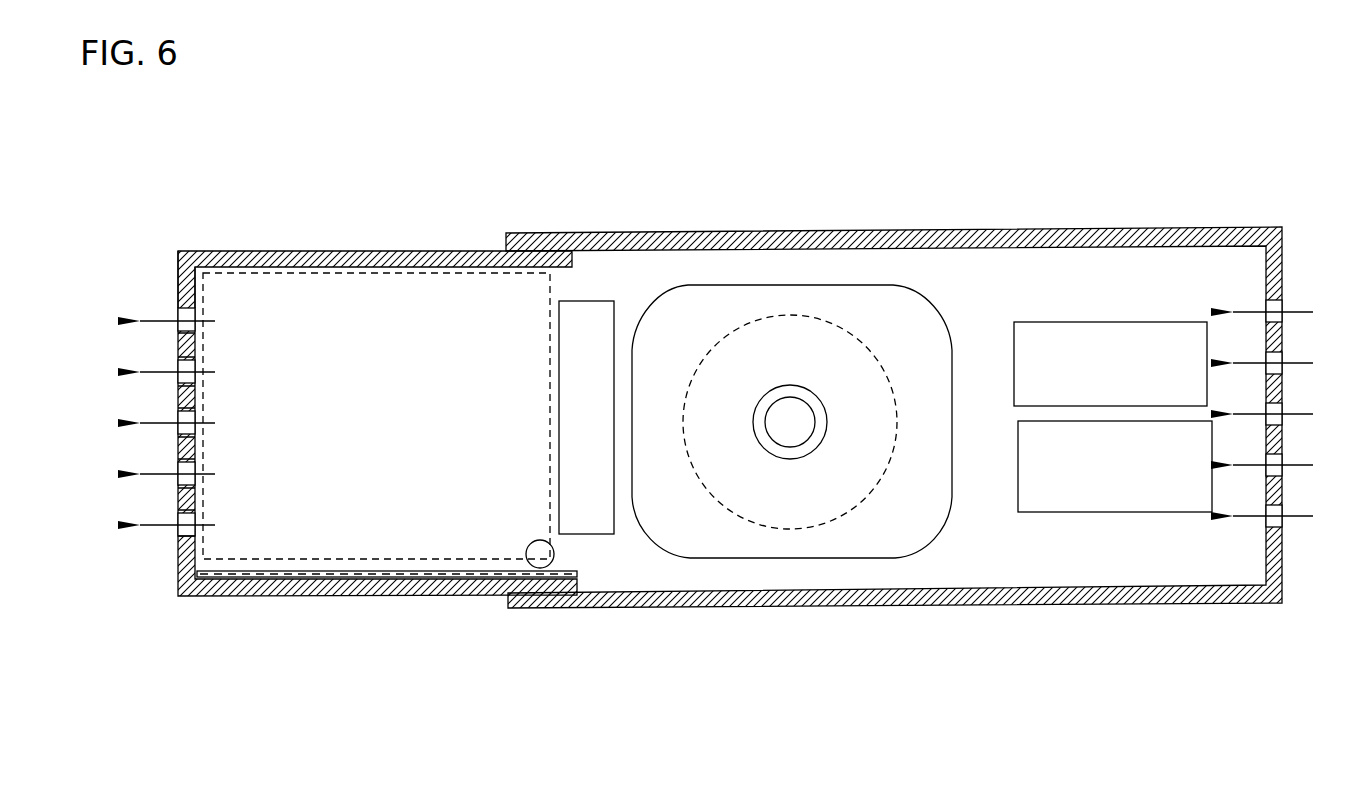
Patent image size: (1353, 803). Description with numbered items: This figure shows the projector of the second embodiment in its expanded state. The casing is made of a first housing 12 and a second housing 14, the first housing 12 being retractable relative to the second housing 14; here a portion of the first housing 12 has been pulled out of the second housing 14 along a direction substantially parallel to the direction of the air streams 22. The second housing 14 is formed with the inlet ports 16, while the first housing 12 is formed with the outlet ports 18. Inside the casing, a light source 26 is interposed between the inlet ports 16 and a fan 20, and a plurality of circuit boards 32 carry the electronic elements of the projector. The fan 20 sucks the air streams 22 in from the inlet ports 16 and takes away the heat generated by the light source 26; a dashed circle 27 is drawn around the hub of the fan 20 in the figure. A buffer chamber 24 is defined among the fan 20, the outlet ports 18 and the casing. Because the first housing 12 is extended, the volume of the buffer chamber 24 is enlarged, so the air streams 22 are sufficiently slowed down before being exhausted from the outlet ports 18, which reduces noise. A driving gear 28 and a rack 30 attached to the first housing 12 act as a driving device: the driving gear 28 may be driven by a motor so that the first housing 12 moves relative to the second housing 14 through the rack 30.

The first housing 12 is at (418, 250).
The second housing 14 is at (525, 233).
The inlet ports 16 is at (1273, 304).
The outlet ports 18 is at (178, 313).
The fan 20 is at (592, 312).
The air streams 22 is at (178, 378).
The buffer chamber 24 is at (178, 290).
The light source 26 is at (717, 285).
The fan 27 is at (822, 320).
The driving gear 28 is at (526, 568).
The rack 30 is at (244, 576).
The circuit boards 32 is at (1103, 437).